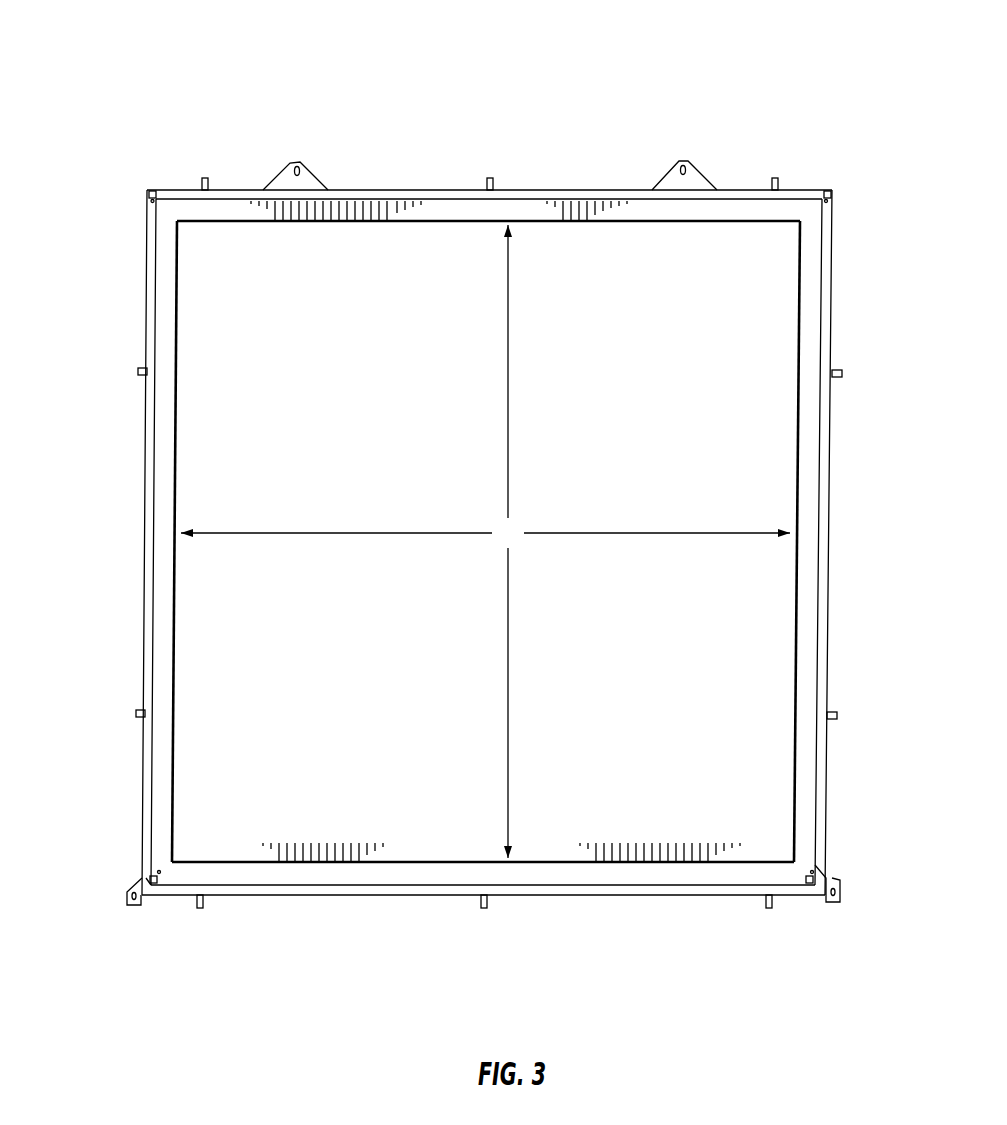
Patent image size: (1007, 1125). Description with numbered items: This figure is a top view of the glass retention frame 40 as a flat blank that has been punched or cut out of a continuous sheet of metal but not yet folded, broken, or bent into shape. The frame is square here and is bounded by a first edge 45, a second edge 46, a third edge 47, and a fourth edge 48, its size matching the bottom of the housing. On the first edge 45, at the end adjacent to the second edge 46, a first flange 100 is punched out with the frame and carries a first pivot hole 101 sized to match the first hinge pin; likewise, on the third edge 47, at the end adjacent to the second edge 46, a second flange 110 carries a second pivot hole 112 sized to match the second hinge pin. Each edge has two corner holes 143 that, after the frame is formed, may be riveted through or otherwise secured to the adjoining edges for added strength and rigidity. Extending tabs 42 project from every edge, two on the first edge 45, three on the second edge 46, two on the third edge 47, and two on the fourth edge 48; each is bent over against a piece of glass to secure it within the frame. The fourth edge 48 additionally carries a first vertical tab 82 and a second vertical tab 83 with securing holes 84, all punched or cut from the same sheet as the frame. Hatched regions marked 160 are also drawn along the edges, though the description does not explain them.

The glass retention frame 40 is at (485, 541).
The extending tabs 42 is at (200, 181).
The first edge 45 is at (120, 538).
The second edge 46 is at (435, 900).
The third edge 47 is at (830, 612).
The fourth edge 48 is at (462, 188).
The first vertical tab 82 is at (288, 186).
The second vertical tab 83 is at (700, 186).
The securing holes 84 is at (303, 166).
The first flange 100 is at (124, 892).
The first pivot hole 101 is at (132, 904).
The second flange 110 is at (836, 878).
The second pivot hole 112 is at (839, 903).
The corner holes 143 is at (148, 203).
The gripping ridges 160 is at (365, 212).